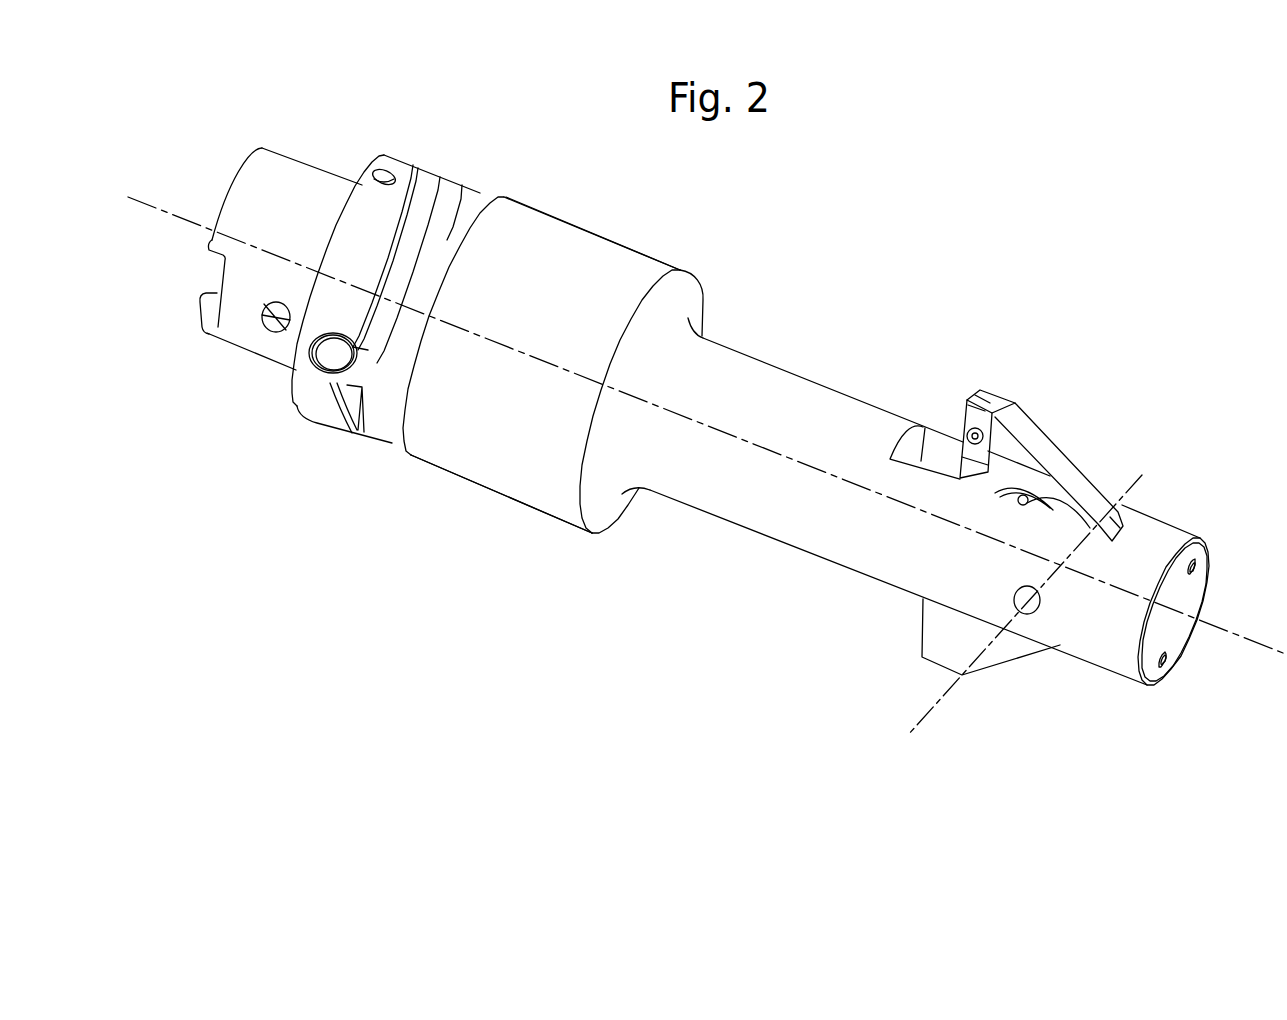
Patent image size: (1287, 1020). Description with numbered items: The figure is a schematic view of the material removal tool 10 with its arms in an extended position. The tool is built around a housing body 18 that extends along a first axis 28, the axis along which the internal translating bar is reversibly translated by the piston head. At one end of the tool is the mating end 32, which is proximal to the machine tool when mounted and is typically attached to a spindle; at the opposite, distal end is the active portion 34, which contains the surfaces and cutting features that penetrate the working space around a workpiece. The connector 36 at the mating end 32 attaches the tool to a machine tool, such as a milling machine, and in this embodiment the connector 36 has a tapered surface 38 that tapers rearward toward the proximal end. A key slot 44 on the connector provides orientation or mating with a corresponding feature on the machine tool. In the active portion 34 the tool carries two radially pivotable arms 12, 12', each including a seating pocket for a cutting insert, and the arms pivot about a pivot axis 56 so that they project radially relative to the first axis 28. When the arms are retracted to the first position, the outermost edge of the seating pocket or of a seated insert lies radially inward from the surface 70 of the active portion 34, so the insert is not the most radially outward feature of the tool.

The material removal tool 10 is at (929, 292).
The radially pivotable arm 12 is at (1006, 465).
The radially pivotable arm 12' is at (951, 637).
The housing body 18 is at (545, 296).
The first axis 28 is at (141, 197).
The mating end 32 is at (193, 290).
The active portion 34 is at (738, 574).
The connector 36 is at (263, 160).
The tapered surface 38 is at (319, 162).
The key slot 44 is at (210, 268).
The pivot axis 56 is at (927, 717).
The surface 70 is at (817, 386).